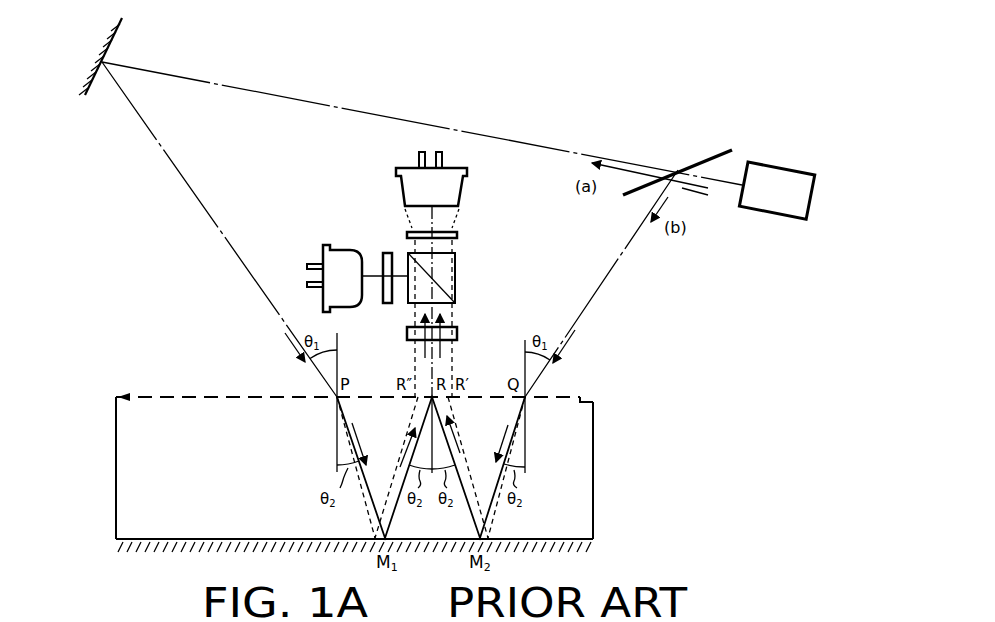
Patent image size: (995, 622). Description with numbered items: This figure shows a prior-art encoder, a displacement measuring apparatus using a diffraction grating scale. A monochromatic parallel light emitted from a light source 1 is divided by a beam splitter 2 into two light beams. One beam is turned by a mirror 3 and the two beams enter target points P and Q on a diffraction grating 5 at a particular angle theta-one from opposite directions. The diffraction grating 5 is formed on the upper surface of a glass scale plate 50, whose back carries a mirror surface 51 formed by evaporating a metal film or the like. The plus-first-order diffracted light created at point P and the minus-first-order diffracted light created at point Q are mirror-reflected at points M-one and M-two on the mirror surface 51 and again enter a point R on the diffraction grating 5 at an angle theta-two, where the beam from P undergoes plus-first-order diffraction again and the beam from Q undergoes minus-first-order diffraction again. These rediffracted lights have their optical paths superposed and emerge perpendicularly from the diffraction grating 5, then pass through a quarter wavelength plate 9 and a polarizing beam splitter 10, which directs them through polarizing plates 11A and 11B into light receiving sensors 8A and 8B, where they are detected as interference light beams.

The light source 1 is at (788, 160).
The beam splitter 2 is at (708, 158).
The mirror 3 is at (112, 45).
The diffraction grating 5 is at (574, 394).
The light receiving sensor 8A is at (459, 196).
The light receiving sensor 8B is at (343, 247).
The quarter wavelength plate 9 is at (457, 333).
The beam splitter cube 10 is at (455, 277).
The polarizing plate 11A is at (457, 235).
The polarizing plate 11B is at (386, 305).
The glass scale plate 50 is at (593, 481).
The mirror surface 51 is at (567, 539).